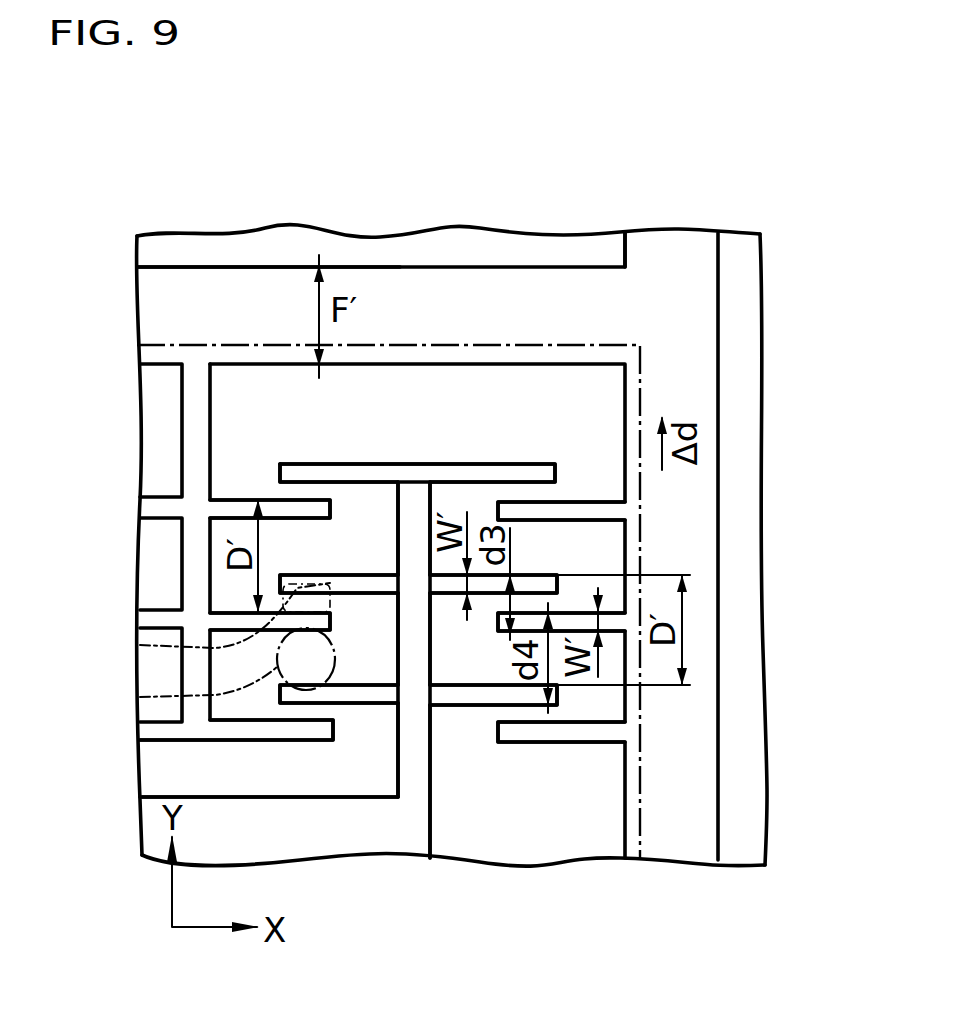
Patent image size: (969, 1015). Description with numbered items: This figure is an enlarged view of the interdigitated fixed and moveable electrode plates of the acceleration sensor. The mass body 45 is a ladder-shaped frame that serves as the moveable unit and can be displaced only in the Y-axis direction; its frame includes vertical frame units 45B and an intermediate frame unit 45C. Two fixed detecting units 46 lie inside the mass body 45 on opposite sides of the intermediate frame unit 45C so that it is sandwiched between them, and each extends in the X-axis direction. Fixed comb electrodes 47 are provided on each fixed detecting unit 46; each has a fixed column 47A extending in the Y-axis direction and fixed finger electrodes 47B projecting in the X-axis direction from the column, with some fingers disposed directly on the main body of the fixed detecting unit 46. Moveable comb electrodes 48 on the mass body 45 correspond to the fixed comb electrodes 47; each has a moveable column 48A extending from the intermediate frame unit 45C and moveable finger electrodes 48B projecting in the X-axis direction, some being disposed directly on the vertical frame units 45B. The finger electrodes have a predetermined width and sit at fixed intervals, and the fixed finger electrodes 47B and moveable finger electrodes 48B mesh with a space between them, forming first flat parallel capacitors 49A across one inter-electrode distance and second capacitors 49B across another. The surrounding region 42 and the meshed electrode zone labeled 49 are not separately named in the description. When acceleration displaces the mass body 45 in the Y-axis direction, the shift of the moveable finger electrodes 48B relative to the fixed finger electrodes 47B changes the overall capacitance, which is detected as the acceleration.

The piezoelectric substrate 42 is at (747, 277).
The mass body 45 is at (523, 278).
The vertical frame unit 45B is at (672, 255).
The intermediate frame unit 45C is at (210, 283).
The fixed detecting unit 46 is at (345, 852).
The fixed comb electrode 47 is at (413, 787).
The fixed column 47A is at (417, 740).
The fixed finger electrode 47B is at (290, 470).
The moveable comb electrode 48 is at (185, 382).
The moveable column 48A is at (187, 430).
The moveable finger electrode 48B is at (232, 610).
The boundary line of electrode region 49 is at (417, 332).
The first capacitor 49A is at (140, 645).
The second capacitor 49B is at (140, 697).